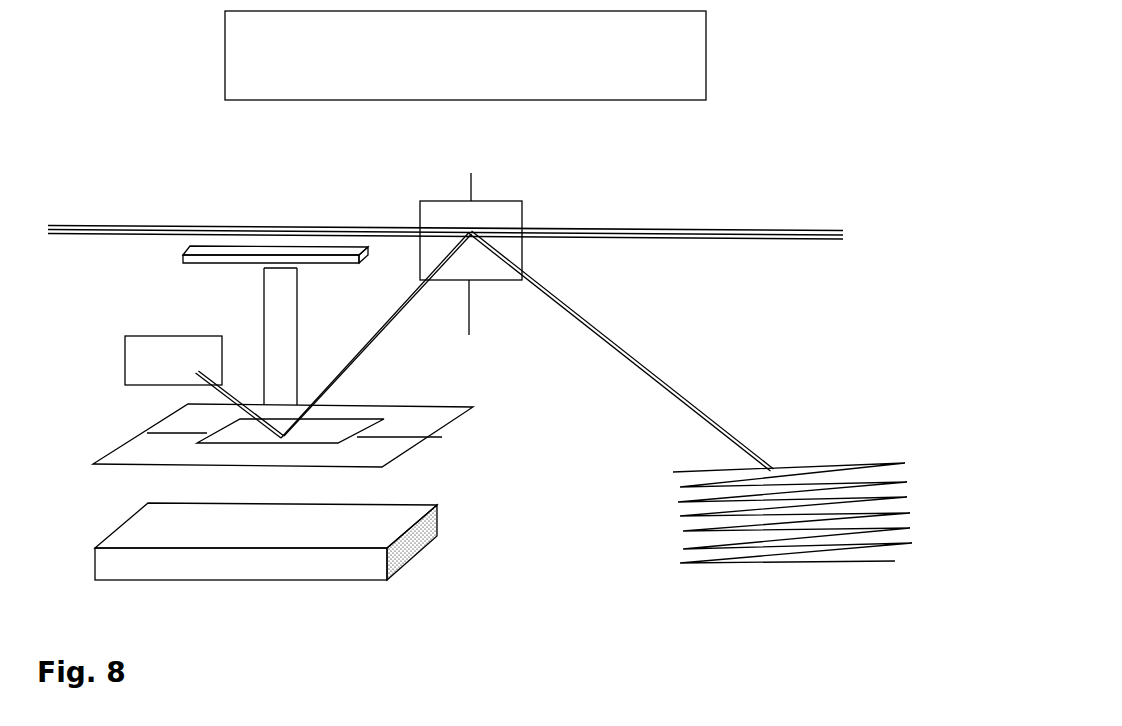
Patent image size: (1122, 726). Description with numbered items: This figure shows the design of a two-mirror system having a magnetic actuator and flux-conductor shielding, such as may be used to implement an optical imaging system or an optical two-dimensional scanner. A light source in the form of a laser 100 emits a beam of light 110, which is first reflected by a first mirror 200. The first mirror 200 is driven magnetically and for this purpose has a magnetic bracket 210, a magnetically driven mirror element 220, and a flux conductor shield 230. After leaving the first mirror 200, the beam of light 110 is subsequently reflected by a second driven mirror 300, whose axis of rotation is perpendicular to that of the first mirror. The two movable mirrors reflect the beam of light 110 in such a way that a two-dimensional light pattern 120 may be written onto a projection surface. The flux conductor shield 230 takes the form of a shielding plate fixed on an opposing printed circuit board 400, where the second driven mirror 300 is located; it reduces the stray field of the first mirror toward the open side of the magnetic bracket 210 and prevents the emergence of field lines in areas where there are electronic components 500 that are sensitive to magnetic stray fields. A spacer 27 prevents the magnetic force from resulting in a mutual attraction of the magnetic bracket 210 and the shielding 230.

The electronic components 500 is at (465, 55).
The printed circuit board 400 is at (717, 207).
The second driven mirror 300 is at (446, 222).
The flux conductor shield 230 is at (342, 258).
The spacer 27 is at (275, 327).
The laser 100 is at (173, 360).
The two-dimensional light pattern 120 is at (612, 367).
The beam of light 110 is at (605, 330).
The magnetically driven mirror element 220 is at (265, 435).
The first mirror 200 is at (327, 427).
The magnetic bracket 210 is at (266, 541).